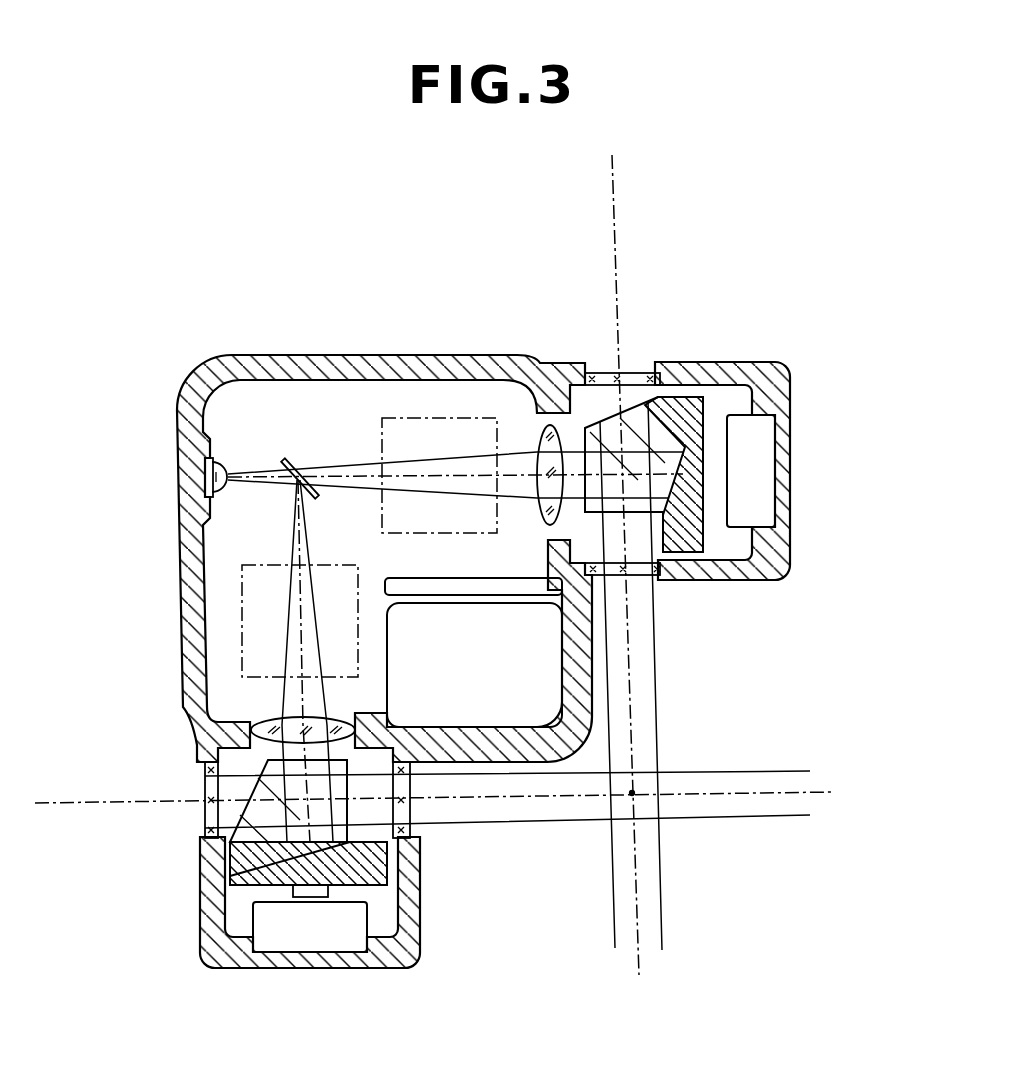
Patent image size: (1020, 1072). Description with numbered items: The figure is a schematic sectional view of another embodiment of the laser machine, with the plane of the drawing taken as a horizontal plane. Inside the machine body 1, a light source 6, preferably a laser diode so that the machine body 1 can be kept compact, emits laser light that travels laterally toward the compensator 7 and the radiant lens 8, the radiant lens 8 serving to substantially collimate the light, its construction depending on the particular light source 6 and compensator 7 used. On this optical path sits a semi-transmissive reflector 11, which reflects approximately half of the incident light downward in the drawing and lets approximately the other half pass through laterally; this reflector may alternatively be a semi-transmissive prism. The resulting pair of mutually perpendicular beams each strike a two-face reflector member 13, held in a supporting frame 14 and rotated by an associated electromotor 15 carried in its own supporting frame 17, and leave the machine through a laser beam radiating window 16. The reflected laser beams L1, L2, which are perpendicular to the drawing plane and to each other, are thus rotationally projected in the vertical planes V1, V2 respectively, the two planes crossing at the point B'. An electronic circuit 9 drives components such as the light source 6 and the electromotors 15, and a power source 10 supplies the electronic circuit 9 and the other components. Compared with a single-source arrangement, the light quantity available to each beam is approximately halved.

The machine body 1 is at (165, 370).
The light source 6 is at (218, 462).
The compensator 7 is at (424, 418).
The radiant lens 8 is at (537, 452).
The electronic circuit 9 is at (560, 587).
The power source 10 is at (495, 697).
The semi-transmissive reflector 11 is at (290, 458).
The two-face reflector member 13 is at (683, 403).
The supporting frame for two-face reflector member 14 is at (707, 537).
The electromotor 15 is at (758, 433).
The laser beam radiating window 16 is at (638, 372).
The supporting frame for electromotor 17 is at (783, 427).
The vertical plane V1 is at (614, 226).
The vertical plane V2 is at (72, 803).
The laser beam L1 is at (652, 903).
The laser beam L2 is at (752, 780).
The beam intersection point B' is at (674, 832).